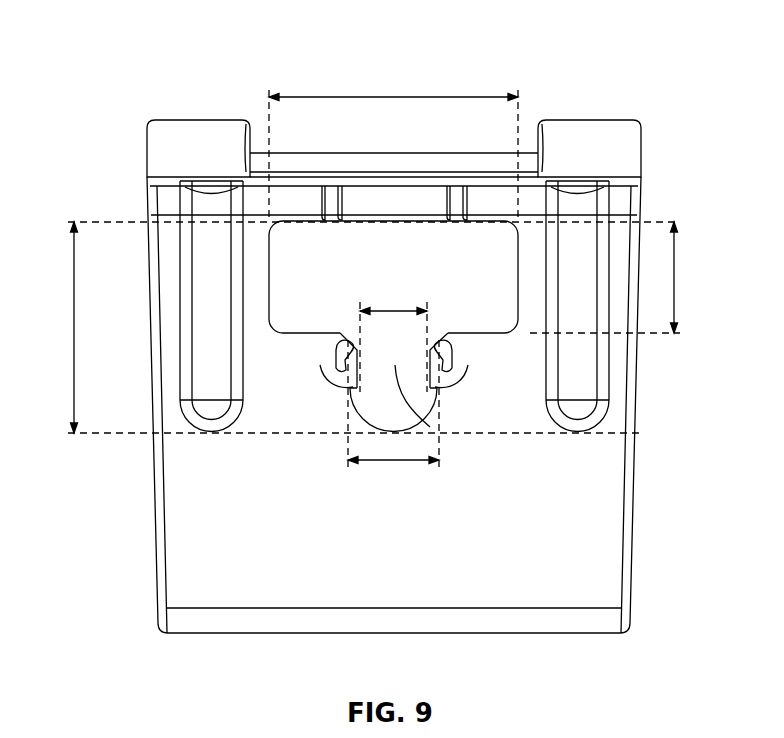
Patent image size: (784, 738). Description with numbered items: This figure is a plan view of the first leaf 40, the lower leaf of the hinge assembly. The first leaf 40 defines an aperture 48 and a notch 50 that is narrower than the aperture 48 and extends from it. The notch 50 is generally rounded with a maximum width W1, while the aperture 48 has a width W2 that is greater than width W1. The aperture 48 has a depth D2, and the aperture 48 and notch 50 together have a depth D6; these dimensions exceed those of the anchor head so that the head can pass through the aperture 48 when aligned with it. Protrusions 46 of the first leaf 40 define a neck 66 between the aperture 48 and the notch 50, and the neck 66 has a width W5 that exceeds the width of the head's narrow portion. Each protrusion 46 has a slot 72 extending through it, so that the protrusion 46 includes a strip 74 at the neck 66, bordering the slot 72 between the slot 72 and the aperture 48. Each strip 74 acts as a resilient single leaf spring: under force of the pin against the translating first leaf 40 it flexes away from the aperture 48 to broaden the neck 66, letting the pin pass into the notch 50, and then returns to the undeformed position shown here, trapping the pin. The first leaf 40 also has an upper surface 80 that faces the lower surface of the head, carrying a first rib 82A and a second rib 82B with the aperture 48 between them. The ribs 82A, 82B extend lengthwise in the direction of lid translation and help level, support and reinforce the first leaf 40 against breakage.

The first leaf 40 is at (180, 499).
The protrusions 46 is at (356, 345).
The aperture 48 is at (430, 240).
The notch 50 is at (383, 409).
The neck 66 is at (422, 423).
The slot 72 is at (338, 351).
The strips 74 is at (347, 387).
The upper surface 80 is at (224, 556).
The first rib 82A is at (203, 230).
The second rib 82B is at (582, 238).
The maximum width of the notch W1 is at (393, 462).
The width of the aperture W2 is at (393, 97).
The width of the neck W5 is at (392, 311).
The depth of the aperture D2 is at (677, 278).
The depth of the aperture and the notch together D6 is at (72, 327).